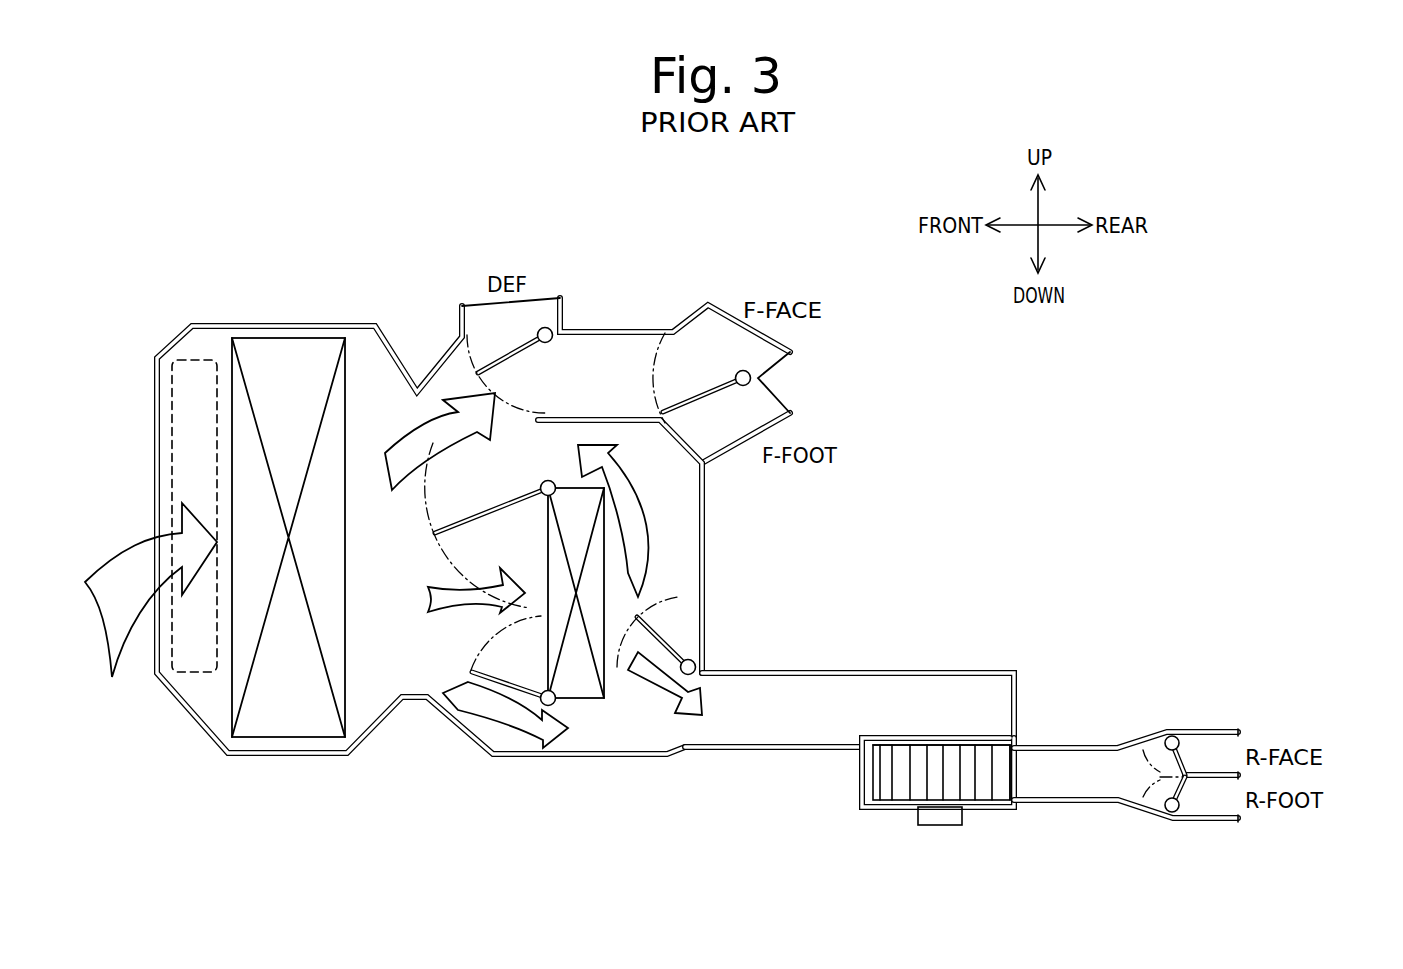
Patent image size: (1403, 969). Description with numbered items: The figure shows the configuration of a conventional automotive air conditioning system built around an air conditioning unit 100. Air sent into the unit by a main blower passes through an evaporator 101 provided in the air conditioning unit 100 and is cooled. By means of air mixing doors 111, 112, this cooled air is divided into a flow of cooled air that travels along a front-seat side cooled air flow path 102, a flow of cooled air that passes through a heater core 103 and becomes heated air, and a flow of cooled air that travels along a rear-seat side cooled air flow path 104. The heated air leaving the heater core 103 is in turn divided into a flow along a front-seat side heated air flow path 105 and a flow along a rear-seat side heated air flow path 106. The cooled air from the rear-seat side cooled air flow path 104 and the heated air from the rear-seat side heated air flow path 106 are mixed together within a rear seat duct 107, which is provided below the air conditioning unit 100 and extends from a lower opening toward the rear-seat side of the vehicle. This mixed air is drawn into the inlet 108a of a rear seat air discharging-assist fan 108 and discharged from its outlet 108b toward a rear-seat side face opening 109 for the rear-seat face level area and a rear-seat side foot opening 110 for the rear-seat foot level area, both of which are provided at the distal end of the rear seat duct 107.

The air conditioning unit 100 is at (634, 300).
The evaporator 101 is at (288, 677).
The front-seat side cooled air flow path 102 is at (452, 385).
The heater core 103 is at (580, 683).
The rear-seat side cooled air flow path 104 is at (573, 737).
The front-seat side heated air flow path 105 is at (682, 495).
The rear-seat side heated air flow path 106 is at (663, 747).
The rear seat duct 107 is at (862, 670).
The rear seat air discharging-assist fan 108 is at (900, 775).
The inlet 108a is at (948, 753).
The outlet 108b is at (1020, 767).
The rear-seat side face opening 109 is at (1200, 747).
The rear-seat side foot opening 110 is at (1198, 803).
The air mixing door 111 is at (477, 517).
The air mixing door 112 is at (510, 685).